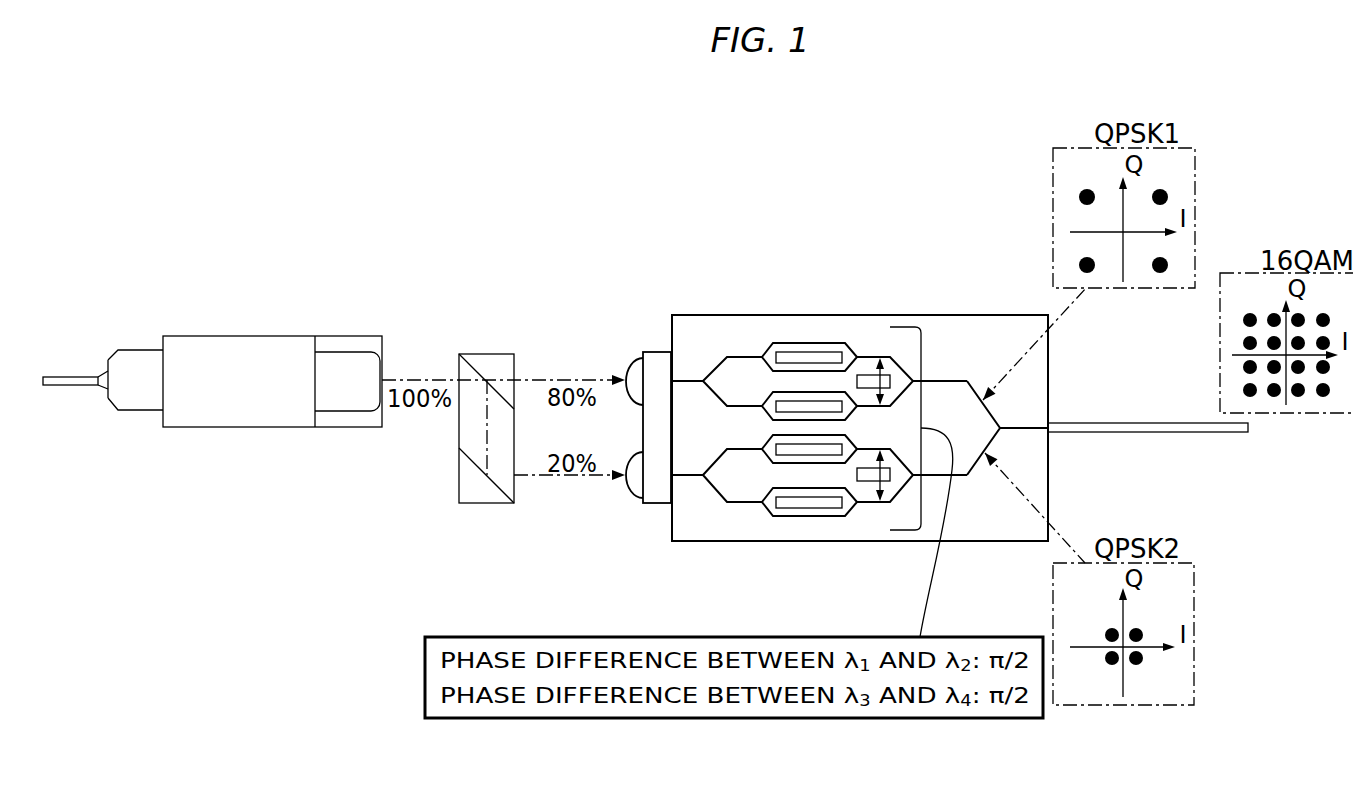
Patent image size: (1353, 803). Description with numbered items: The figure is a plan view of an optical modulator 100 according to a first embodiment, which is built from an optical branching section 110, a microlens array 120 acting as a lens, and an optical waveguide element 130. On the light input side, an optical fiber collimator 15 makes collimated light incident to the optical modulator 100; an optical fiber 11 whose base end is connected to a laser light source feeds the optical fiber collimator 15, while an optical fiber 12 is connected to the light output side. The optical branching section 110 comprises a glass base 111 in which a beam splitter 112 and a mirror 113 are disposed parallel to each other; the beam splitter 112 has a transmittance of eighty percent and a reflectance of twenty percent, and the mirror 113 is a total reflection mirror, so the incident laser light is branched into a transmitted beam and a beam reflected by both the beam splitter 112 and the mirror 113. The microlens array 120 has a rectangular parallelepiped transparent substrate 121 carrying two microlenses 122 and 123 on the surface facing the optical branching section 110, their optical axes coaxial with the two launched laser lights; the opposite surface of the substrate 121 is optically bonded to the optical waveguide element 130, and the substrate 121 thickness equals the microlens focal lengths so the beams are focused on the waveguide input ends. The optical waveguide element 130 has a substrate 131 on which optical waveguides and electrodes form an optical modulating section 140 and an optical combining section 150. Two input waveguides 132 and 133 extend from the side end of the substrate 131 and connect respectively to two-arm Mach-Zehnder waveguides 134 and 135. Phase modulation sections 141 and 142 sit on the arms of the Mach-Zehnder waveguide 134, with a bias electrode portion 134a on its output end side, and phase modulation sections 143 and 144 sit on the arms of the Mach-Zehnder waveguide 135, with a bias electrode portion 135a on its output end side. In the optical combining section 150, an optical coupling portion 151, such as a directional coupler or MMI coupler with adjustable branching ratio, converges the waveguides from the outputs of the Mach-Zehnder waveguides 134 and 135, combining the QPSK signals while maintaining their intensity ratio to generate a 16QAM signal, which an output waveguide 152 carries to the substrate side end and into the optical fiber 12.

The optical fiber 11 is at (63, 378).
The optical fiber 12 is at (1216, 433).
The optical fiber collimator 15 is at (283, 338).
The optical modulator 100 is at (477, 164).
The optical branching section 110 is at (508, 340).
The glass base 111 is at (482, 504).
The beam splitter 112 is at (468, 362).
The mirror 113 is at (468, 457).
The microlens array 120 is at (649, 338).
The transparent substrate 121 is at (650, 504).
The microlens 122 is at (627, 360).
The microlens 123 is at (628, 492).
The optical waveguide element 130 is at (708, 203).
The substrate 131 is at (1020, 542).
The input waveguide 132 is at (685, 380).
The input waveguide 133 is at (685, 477).
The Mach-Zehnder waveguide 134 is at (745, 345).
The bias electrode portion 134a is at (867, 378).
The Mach-Zehnder waveguide 135 is at (713, 448).
The bias electrode portion 135a is at (865, 480).
The optical modulating section 140 is at (790, 239).
The phase modulation section 141 is at (785, 343).
The phase modulation section 142 is at (813, 397).
The phase modulation section 143 is at (813, 462).
The phase modulation section 144 is at (792, 515).
The optical combining section 150 is at (1040, 242).
The optical coupling portion 151 is at (1000, 428).
The output waveguide 152 is at (1033, 427).